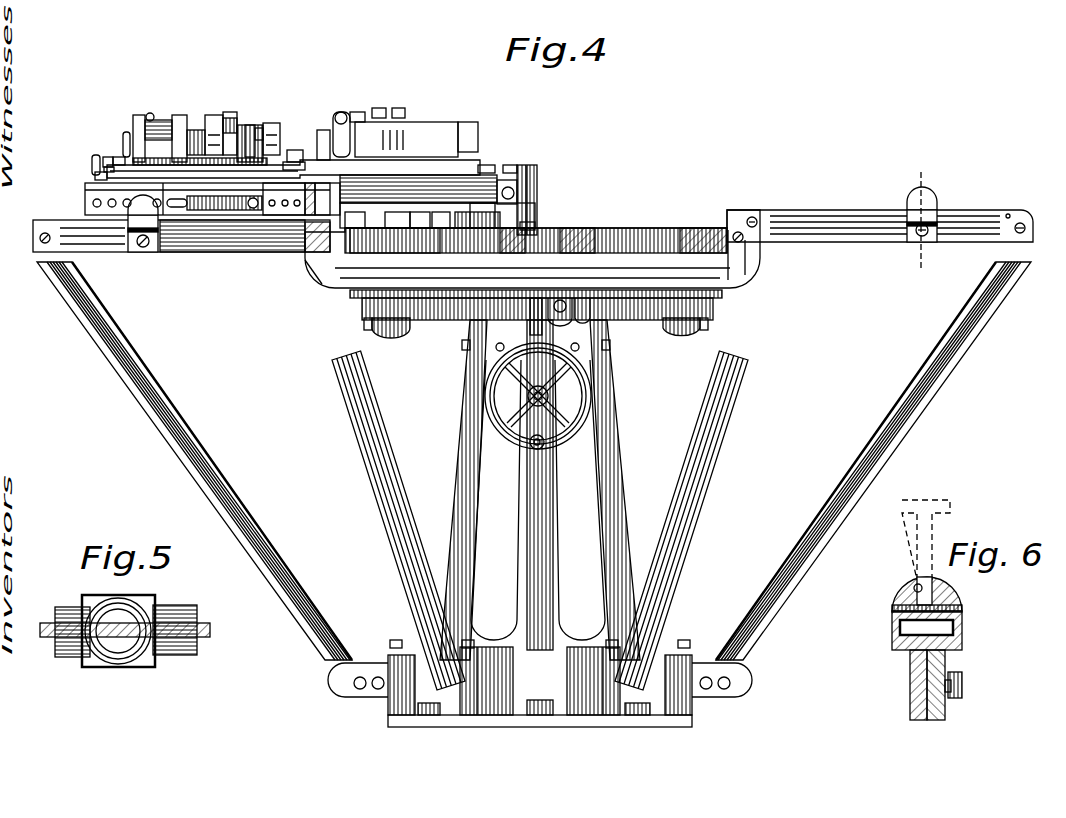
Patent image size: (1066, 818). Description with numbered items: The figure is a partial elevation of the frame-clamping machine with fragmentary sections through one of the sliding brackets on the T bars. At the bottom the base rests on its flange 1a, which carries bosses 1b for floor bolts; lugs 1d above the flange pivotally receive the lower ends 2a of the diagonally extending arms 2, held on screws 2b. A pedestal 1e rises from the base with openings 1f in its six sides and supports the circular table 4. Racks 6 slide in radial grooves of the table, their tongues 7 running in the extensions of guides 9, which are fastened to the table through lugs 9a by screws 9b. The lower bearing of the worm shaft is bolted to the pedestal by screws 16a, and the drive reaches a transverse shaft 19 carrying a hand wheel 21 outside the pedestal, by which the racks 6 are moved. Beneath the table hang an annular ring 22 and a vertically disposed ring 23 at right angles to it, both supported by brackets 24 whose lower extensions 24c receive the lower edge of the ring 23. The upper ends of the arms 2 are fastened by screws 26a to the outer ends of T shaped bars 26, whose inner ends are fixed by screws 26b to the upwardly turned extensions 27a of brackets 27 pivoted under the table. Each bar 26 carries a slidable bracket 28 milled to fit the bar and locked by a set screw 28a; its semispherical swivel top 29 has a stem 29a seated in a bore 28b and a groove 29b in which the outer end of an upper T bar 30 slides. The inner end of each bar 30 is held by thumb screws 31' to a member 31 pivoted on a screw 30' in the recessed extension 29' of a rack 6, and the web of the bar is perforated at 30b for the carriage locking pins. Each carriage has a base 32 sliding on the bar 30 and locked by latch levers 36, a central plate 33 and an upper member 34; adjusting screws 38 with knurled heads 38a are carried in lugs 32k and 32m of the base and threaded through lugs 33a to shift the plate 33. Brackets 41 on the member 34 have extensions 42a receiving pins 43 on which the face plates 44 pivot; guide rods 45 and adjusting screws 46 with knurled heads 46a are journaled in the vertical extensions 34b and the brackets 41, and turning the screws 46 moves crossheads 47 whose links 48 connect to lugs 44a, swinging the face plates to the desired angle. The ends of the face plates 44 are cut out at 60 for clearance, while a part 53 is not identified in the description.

In FIG. 4, the flange 1a is at (640, 715).
In FIG. 4, the bosses 1b is at (430, 715).
In FIG. 4, the lugs 1d is at (395, 710).
In FIG. 4, the pedestal 1e is at (610, 440).
In FIG. 4, the openings 1f is at (478, 535).
In FIG. 4, the diagonally extending arms 2 is at (228, 500).
In FIG. 4, the lower ends of arms 2a is at (385, 660).
In FIG. 4, the screws 2b is at (396, 640).
In FIG. 4, the circular table 4 is at (590, 232).
In FIG. 4, the racks 6 is at (420, 215).
In FIG. 4, the tongues 7 is at (438, 215).
In FIG. 4, the guides 9 is at (395, 215).
In FIG. 4, the lugs 9a is at (547, 214).
In FIG. 4, the screws 9b is at (530, 212).
In FIG. 4, the bolts or screws 16a is at (462, 346).
In FIG. 4, the transverse shaft 19 is at (548, 395).
In FIG. 4, the hand wheel 21 is at (594, 393).
In FIG. 4, the annular ring 22 is at (722, 296).
In FIG. 4, the ring 23 is at (713, 310).
In FIG. 4, the brackets 24 is at (690, 338).
In FIG. 4, the lower extensions 24c is at (710, 324).
In FIG. 4, the T shaped bars 26 is at (533, 231).
In FIG. 5, the T shaped bars 26 is at (68, 607).
In FIG. 6, the T shaped bars 26 is at (912, 658).
In FIG. 4, the rivets or screws 26a is at (38, 237).
In FIG. 4, the rivets or screws 26b is at (315, 235).
In FIG. 4, the brackets 27 is at (532, 249).
In FIG. 4, the upwardly turned extensions 27a is at (315, 258).
In FIG. 4, the slidable brackets 28 is at (128, 240).
In FIG. 5, the slidable brackets 28 is at (150, 598).
In FIG. 6, the slidable brackets 28 is at (962, 625).
In FIG. 4, the set screws 28a is at (140, 248).
In FIG. 6, the set screws 28a is at (962, 684).
In FIG. 6, the bore 28b is at (900, 628).
In FIG. 4, the swivel top 29 is at (511, 210).
In FIG. 5, the swivel top 29 is at (118, 619).
In FIG. 6, the swivel top 29 is at (943, 594).
In FIG. 6, the stem 29a is at (900, 609).
In FIG. 6, the groove 29b is at (912, 583).
In FIG. 4, the T bars 30 is at (173, 200).
In FIG. 5, the T bars 30 is at (175, 640).
In FIG. 6, the T bars 30 is at (938, 540).
In FIG. 4, the perforations 30b is at (90, 205).
In FIG. 4, the members 31 is at (529, 181).
In FIG. 4, the bases 32 is at (293, 187).
In FIG. 4, the vertically extended lugs 32k is at (92, 164).
In FIG. 4, the vertically extended lugs 32m is at (118, 157).
In FIG. 4, the central plates 33 is at (200, 154).
In FIG. 4, the lugs 33a is at (104, 168).
In FIG. 4, the upper members 34 is at (305, 145).
In FIG. 4, the vertical extensions 34b is at (152, 116).
In FIG. 4, the latch levers 36 is at (200, 222).
In FIG. 4, the adjusting screws 38 is at (105, 160).
In FIG. 4, the knurled heads 38a is at (95, 176).
In FIG. 4, the brackets 41 is at (214, 115).
In FIG. 4, the extensions 42a is at (236, 118).
In FIG. 4, the pins 43 is at (236, 112).
In FIG. 4, the face plates 44 is at (282, 137).
In FIG. 4, the lugs 44a is at (262, 128).
In FIG. 4, the guide rods 45 is at (197, 130).
In FIG. 4, the adjusting screws 46 is at (168, 112).
In FIG. 4, the knurled heads 46a is at (127, 132).
In FIG. 4, the crossheads 47 is at (180, 115).
In FIG. 4, the links 48 is at (255, 125).
In FIG. 4, the carriage part 53 is at (307, 158).
In FIG. 4, the cut out 60 is at (280, 128).
In FIG. 4, the screws 30' is at (502, 158).
In FIG. 4, the recessed vertically extended portions 29' is at (533, 160).
In FIG. 4, the thumb screws 31' is at (543, 200).